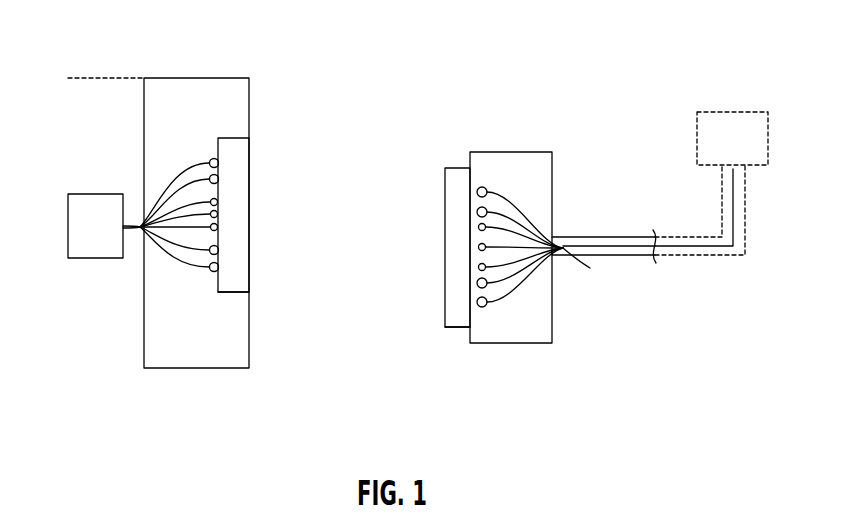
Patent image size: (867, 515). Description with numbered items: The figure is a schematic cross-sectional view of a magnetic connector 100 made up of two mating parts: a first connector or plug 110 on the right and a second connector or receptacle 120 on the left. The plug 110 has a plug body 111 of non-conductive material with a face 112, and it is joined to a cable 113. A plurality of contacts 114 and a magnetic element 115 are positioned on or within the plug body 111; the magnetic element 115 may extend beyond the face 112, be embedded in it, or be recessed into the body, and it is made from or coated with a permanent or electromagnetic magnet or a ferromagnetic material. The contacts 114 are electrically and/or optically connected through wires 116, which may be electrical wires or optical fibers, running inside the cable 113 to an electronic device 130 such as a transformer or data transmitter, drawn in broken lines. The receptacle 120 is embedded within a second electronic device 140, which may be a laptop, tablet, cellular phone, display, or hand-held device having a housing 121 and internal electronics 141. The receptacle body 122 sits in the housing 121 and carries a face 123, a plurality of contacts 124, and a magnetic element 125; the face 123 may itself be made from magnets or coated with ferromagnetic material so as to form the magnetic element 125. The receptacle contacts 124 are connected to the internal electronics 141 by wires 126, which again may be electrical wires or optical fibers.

The connector 100 is at (614, 168).
The plug 110 is at (530, 355).
The plug body 111 is at (520, 152).
The face 112 is at (470, 160).
The cable 113 is at (594, 237).
The contacts 114 is at (487, 304).
The magnetic element 115 is at (445, 327).
The wires 116 is at (566, 256).
The electronic device 130 is at (711, 183).
The receptacle 120 is at (192, 375).
The housing 121 is at (249, 105).
The body 122 is at (172, 290).
The face 123 is at (218, 188).
The contacts 124 is at (211, 160).
The magnetic element 125 is at (232, 292).
The wires 126 is at (150, 231).
The second electronic device 140 is at (140, 78).
The internal electronics 141 is at (95, 226).